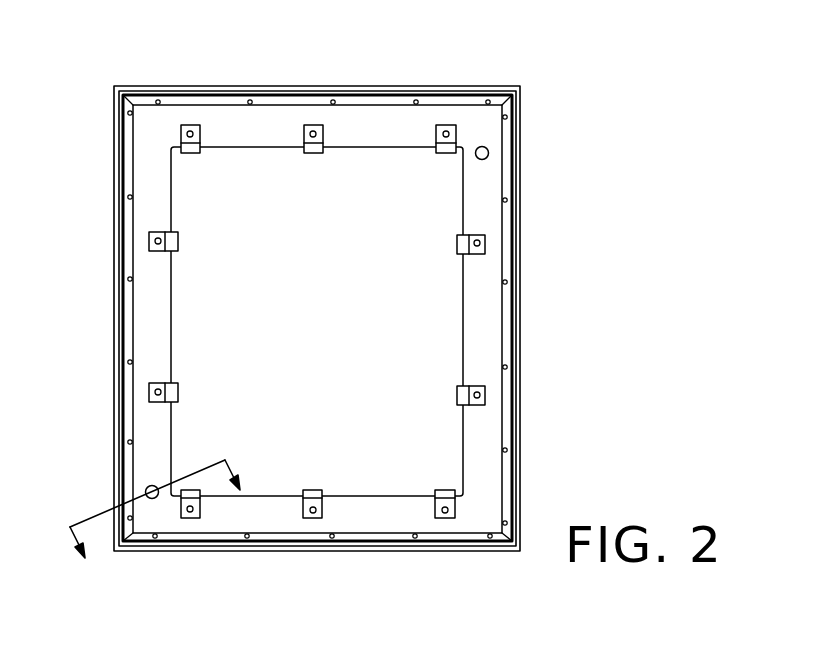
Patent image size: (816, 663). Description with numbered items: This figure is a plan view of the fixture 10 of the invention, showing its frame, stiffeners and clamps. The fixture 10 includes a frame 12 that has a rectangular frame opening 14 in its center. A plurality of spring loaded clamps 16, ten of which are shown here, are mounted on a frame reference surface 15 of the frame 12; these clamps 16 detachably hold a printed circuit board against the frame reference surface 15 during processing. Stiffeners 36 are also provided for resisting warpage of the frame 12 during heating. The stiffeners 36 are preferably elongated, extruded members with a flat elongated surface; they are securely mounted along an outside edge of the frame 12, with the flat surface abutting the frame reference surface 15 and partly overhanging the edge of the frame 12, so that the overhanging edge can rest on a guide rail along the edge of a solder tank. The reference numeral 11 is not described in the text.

The fixture 10 is at (392, 42).
The mounting hole 11 is at (486, 158).
The frame 12 is at (262, 515).
The rectangular frame opening 14 is at (335, 361).
The frame reference surface 15 is at (470, 312).
The spring loaded clamp 16 is at (441, 154).
The stiffener 36 is at (523, 143).